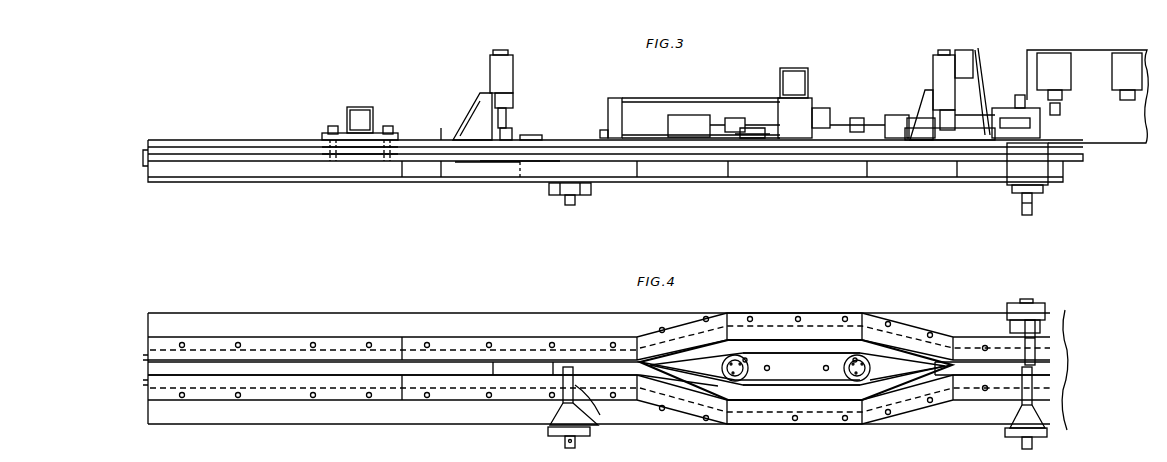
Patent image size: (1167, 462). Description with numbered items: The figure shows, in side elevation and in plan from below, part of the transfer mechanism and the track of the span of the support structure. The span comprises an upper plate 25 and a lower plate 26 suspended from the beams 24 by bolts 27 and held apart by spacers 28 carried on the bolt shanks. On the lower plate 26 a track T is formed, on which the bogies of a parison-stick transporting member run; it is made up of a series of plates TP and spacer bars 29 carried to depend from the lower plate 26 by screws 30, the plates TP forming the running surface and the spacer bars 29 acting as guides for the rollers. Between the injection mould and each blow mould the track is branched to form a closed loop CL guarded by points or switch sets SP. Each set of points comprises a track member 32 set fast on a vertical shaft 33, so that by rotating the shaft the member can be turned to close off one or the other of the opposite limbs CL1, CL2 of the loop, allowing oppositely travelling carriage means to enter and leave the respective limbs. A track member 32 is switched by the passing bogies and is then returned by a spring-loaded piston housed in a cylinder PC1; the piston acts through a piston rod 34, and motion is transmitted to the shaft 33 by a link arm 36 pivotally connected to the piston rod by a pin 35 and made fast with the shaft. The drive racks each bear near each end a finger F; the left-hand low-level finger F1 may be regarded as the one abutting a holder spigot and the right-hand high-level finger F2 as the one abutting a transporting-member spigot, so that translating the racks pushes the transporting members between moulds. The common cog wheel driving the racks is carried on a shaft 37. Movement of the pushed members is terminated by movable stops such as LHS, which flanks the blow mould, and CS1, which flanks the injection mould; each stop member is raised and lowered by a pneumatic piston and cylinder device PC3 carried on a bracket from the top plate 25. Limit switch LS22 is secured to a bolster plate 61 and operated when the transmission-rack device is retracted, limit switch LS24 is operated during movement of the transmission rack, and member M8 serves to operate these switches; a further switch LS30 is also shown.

In FIG. 3, the track T is at (420, 184).
In FIG. 4, the track T is at (594, 334).
In FIG. 3, the plates TP is at (510, 178).
In FIG. 4, the plates TP is at (520, 344).
In FIG. 3, the beams 24 is at (361, 107).
In FIG. 3, the upper plate 25 is at (445, 124).
In FIG. 3, the lower plate 26 is at (441, 176).
In FIG. 3, the bolts 27 is at (330, 126).
In FIG. 3, the spacers 28 is at (322, 148).
In FIG. 3, the spacer bars 29 is at (470, 172).
In FIG. 4, the screws 30 is at (489, 343).
In FIG. 4, the track member 32 is at (729, 384).
In FIG. 4, the vertical shaft 33 is at (742, 376).
In FIG. 3, the piston rod 34 is at (725, 120).
In FIG. 3, the pin 35 is at (740, 138).
In FIG. 3, the link arm 36 is at (748, 126).
In FIG. 3, the shaft 37 is at (1015, 98).
In FIG. 3, the bolster plate 61 is at (1027, 52).
In FIG. 3, the left-hand stop LHS is at (515, 120).
In FIG. 3, the cylinder PC1 is at (680, 115).
In FIG. 3, the pneumatic piston and cylinder device PC3 is at (936, 78).
In FIG. 3, the limit switch 30 LS30 is at (962, 50).
In FIG. 3, the limit switch LS22 is at (1062, 96).
In FIG. 3, the limit switch LS24 is at (1128, 102).
In FIG. 3, the centre stop CS1 is at (955, 108).
In FIG. 3, the switch operating member M8 is at (1060, 112).
In FIG. 3, the finger F is at (574, 204).
In FIG. 4, the finger F is at (575, 385).
In FIG. 4, the low-level finger F1 is at (562, 372).
In FIG. 4, the high-level finger F2 is at (1028, 346).
In FIG. 4, the closed loop CL is at (742, 316).
In FIG. 4, the limb of the loop CL1 is at (803, 345).
In FIG. 4, the limb of the loop CL2 is at (790, 398).
In FIG. 4, the points or switch sets SP is at (720, 384).